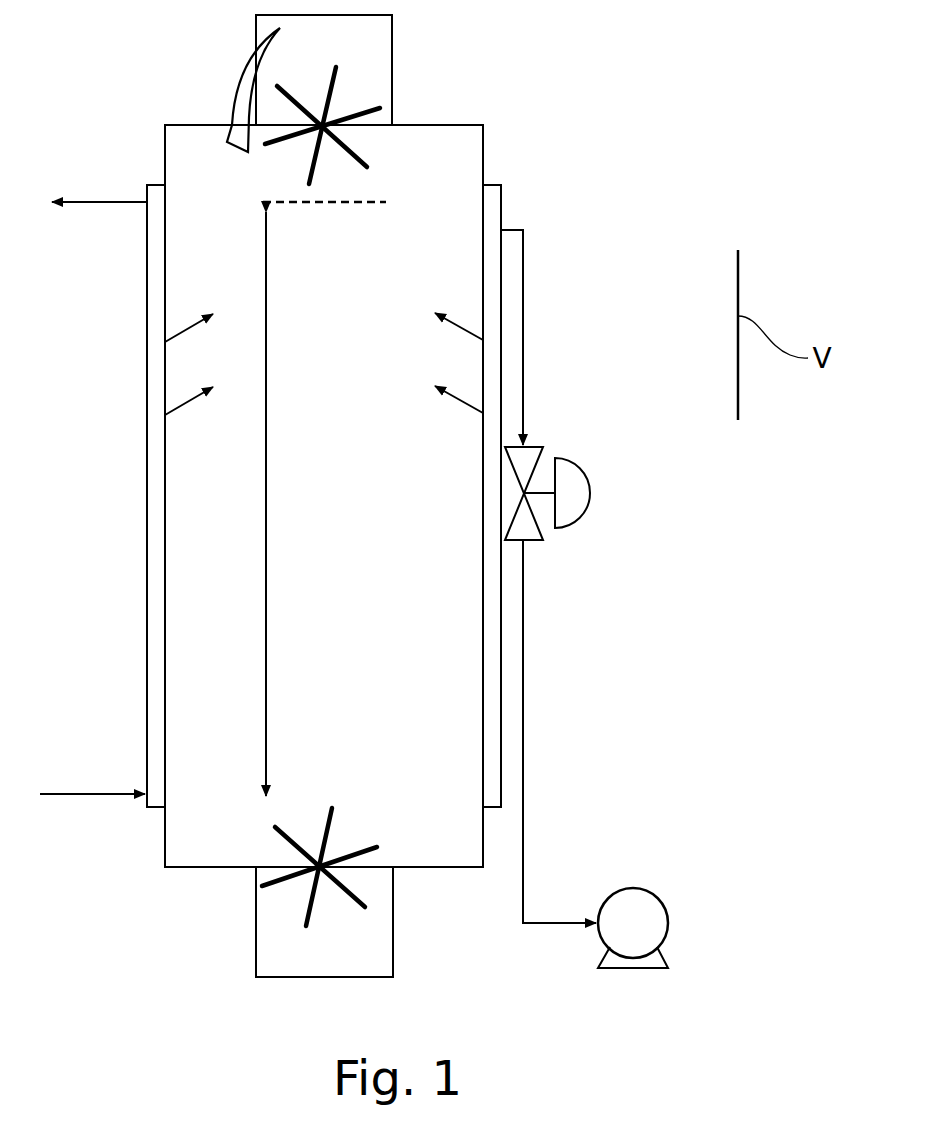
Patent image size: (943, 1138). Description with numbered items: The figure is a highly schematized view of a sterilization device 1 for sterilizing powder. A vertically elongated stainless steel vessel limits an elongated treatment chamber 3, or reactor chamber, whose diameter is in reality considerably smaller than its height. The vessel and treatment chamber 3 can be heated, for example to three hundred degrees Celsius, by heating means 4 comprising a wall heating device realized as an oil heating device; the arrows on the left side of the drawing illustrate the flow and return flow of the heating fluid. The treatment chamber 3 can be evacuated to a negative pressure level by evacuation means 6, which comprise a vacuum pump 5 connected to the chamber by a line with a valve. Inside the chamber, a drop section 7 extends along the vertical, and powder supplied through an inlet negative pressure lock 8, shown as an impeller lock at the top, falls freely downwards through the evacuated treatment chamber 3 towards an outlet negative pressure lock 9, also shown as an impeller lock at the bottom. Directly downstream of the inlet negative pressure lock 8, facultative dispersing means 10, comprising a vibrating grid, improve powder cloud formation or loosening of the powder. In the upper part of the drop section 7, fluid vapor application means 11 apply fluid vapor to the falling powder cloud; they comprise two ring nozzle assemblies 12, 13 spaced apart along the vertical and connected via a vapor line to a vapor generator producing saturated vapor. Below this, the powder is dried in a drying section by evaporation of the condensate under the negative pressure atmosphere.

The sterilization device 1 is at (604, 625).
The treatment chamber 3 is at (368, 612).
The heating means 4 is at (156, 570).
The vacuum pump 5 is at (653, 920).
The evacuation means 6 is at (564, 808).
The drop section 7 is at (266, 472).
The inlet negative pressure lock 8 is at (403, 98).
The outlet negative pressure lock 9 is at (244, 909).
The dispersing means 10 is at (385, 193).
The fluid vapor application means 11 is at (142, 355).
The ring nozzle assembly 12 is at (468, 328).
The ring nozzle assembly 13 is at (468, 397).